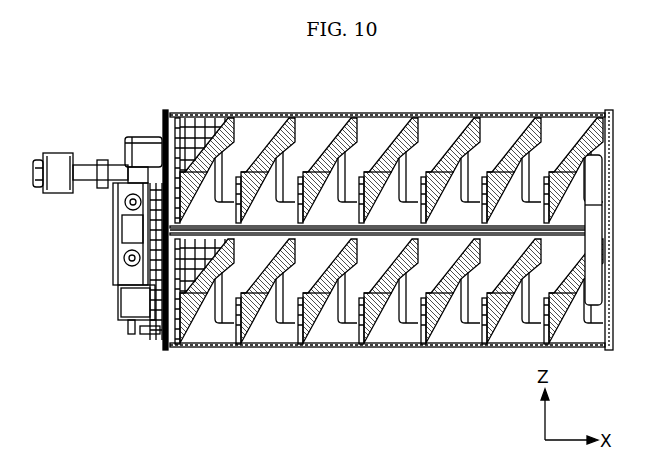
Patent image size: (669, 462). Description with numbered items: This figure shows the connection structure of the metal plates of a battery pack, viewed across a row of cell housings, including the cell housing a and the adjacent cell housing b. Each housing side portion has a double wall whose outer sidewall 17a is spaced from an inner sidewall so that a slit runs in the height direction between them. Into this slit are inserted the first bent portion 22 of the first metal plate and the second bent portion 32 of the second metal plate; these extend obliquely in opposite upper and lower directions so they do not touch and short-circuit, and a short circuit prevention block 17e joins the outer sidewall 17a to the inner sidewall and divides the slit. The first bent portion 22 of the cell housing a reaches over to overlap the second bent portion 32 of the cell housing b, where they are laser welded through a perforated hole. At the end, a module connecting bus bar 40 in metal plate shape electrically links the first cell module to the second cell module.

The outer sidewall 17a is at (199, 113).
The short circuit prevention block 17e is at (257, 300).
The first bent portion 22 is at (353, 287).
The second bent portion 32 is at (323, 337).
The module connecting bus bar 40 is at (598, 217).
The cell housing a is at (407, 362).
The cell housing b is at (345, 362).